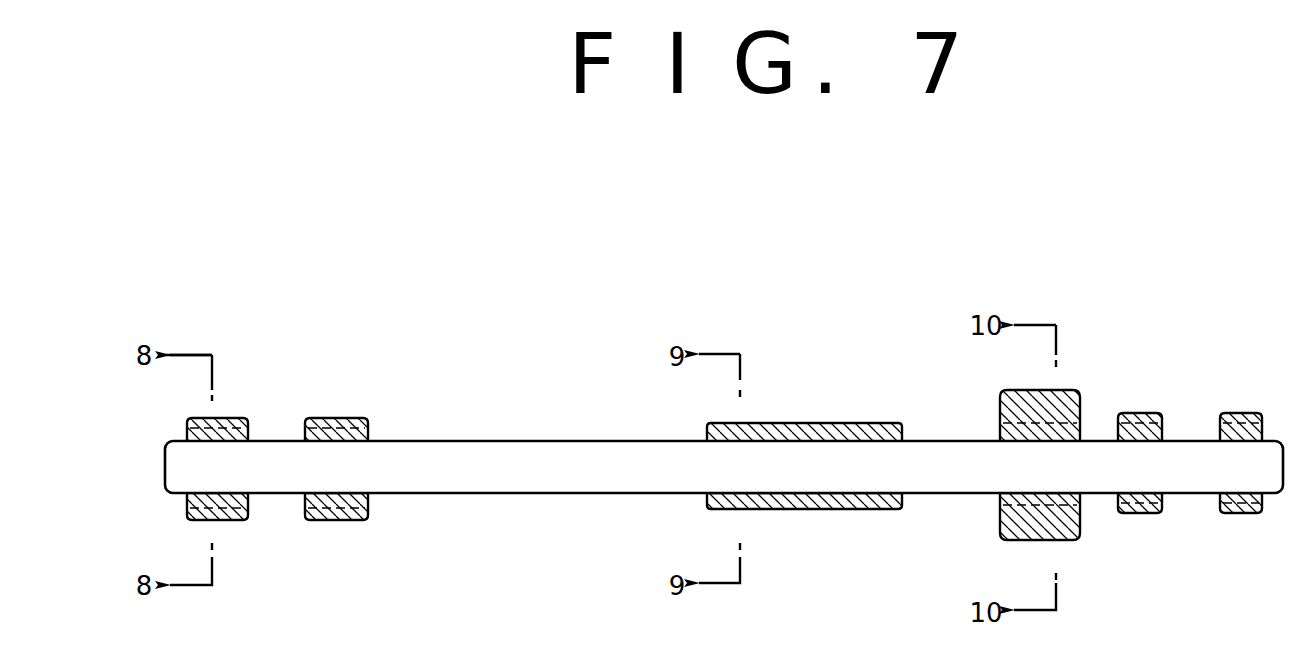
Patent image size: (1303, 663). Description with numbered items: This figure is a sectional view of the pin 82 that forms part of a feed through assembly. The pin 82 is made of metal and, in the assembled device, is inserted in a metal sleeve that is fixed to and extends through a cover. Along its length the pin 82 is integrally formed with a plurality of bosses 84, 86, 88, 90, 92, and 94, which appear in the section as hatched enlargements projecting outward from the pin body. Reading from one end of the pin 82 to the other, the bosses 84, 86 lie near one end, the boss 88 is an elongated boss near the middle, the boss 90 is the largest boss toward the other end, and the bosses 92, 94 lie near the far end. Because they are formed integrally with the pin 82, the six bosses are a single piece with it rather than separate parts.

The pin 82 is at (530, 457).
The boss 84 is at (237, 420).
The boss 86 is at (348, 420).
The boss 88 is at (820, 428).
The boss 90 is at (1068, 400).
The boss 92 is at (1142, 513).
The boss 94 is at (1247, 513).